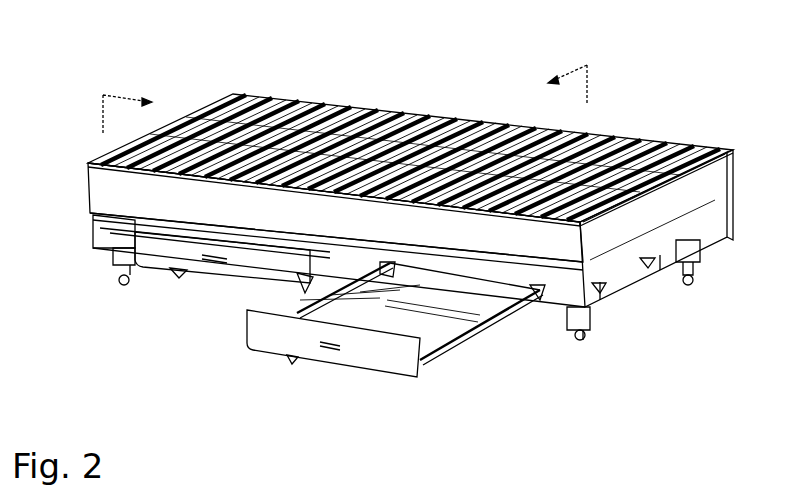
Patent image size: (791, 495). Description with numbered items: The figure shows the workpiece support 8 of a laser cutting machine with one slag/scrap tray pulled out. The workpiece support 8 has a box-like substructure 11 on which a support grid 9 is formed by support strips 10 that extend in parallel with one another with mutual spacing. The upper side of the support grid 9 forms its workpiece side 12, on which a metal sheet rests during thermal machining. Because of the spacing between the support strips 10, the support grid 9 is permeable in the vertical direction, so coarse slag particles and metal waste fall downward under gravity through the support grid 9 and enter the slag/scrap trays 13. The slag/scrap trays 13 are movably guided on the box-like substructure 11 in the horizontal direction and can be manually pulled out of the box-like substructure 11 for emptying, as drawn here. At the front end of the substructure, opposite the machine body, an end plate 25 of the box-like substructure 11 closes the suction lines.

The workpiece support 8 is at (427, 213).
The support grid 9 is at (410, 128).
The support strips 10 is at (349, 115).
The box-like substructure 11 is at (725, 237).
The workpiece side 12 is at (457, 124).
The slag/scrap tray 13 is at (480, 338).
The end plate 25 is at (414, 236).